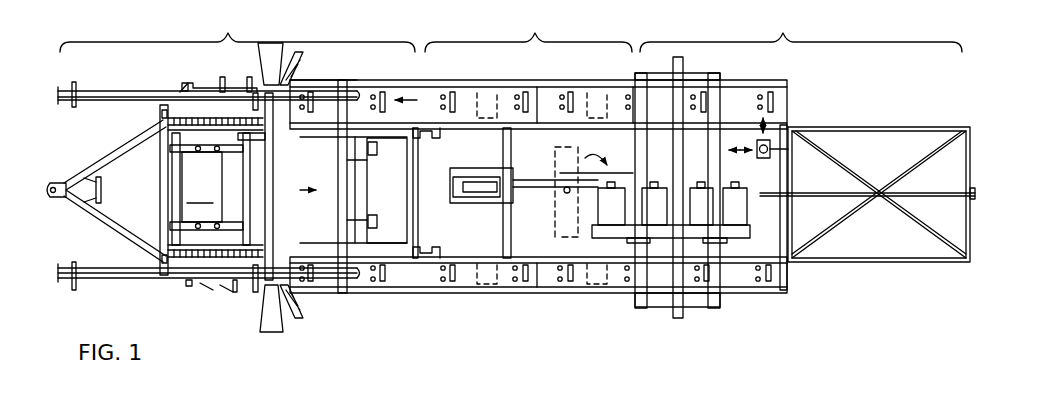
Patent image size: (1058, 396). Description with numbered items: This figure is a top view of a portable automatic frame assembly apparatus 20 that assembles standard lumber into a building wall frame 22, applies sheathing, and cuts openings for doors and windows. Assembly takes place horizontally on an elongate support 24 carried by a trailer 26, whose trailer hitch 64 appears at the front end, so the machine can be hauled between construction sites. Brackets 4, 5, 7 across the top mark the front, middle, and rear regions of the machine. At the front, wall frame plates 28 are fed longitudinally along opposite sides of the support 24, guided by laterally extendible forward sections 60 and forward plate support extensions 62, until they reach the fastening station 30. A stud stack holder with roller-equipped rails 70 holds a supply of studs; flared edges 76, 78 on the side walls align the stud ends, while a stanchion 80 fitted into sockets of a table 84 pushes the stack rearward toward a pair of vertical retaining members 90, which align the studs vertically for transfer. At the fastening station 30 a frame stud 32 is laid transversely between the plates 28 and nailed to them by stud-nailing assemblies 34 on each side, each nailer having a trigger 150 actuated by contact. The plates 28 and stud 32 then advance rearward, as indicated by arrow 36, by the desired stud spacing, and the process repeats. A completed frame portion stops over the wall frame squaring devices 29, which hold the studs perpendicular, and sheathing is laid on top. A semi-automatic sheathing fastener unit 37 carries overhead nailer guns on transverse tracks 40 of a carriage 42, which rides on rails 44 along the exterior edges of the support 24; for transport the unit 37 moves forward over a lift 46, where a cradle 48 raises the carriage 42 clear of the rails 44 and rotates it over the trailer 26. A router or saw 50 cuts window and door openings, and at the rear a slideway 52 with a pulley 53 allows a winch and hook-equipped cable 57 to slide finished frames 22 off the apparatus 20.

The feed section 4 is at (237, 30).
The intermediate section 5 is at (528, 30).
The discharge section 7 is at (801, 30).
The portable automatic frame assembly apparatus 20 is at (425, 296).
The building wall frame 22 is at (332, 82).
The elongate support 24 is at (158, 90).
The trailer 26 is at (110, 154).
The wall frame plates 28 is at (150, 110).
The wall frame squaring devices 29 is at (428, 134).
The fastening station 30 is at (297, 297).
The frame stud 32 is at (344, 206).
The stud-nailing assemblies 34 is at (296, 64).
The arrow 36 is at (336, 180).
The semi-automatic sheathing fastener unit 37 is at (655, 309).
The transverse tracks 40 is at (636, 298).
The carriage 42 is at (712, 311).
The rails 44 is at (778, 66).
The lift 46 is at (470, 203).
The cradle 48 is at (566, 200).
The router or saw 50 is at (786, 150).
The slideway 52 is at (844, 262).
The pulley 53 is at (965, 192).
The hook-equipped cable 57 is at (842, 203).
The laterally extendible forward sections 60 is at (181, 89).
The forward plate support extensions 62 is at (92, 62).
The trailer hitch 64 is at (57, 181).
The roller-equipped rails 70 is at (165, 118).
The flared edge 76 is at (192, 84).
The flared edge 78 is at (216, 292).
The stanchion 80 is at (160, 184).
The table 84 is at (217, 189).
The vertical retaining members 90 is at (262, 100).
The trigger 150 is at (490, 92).